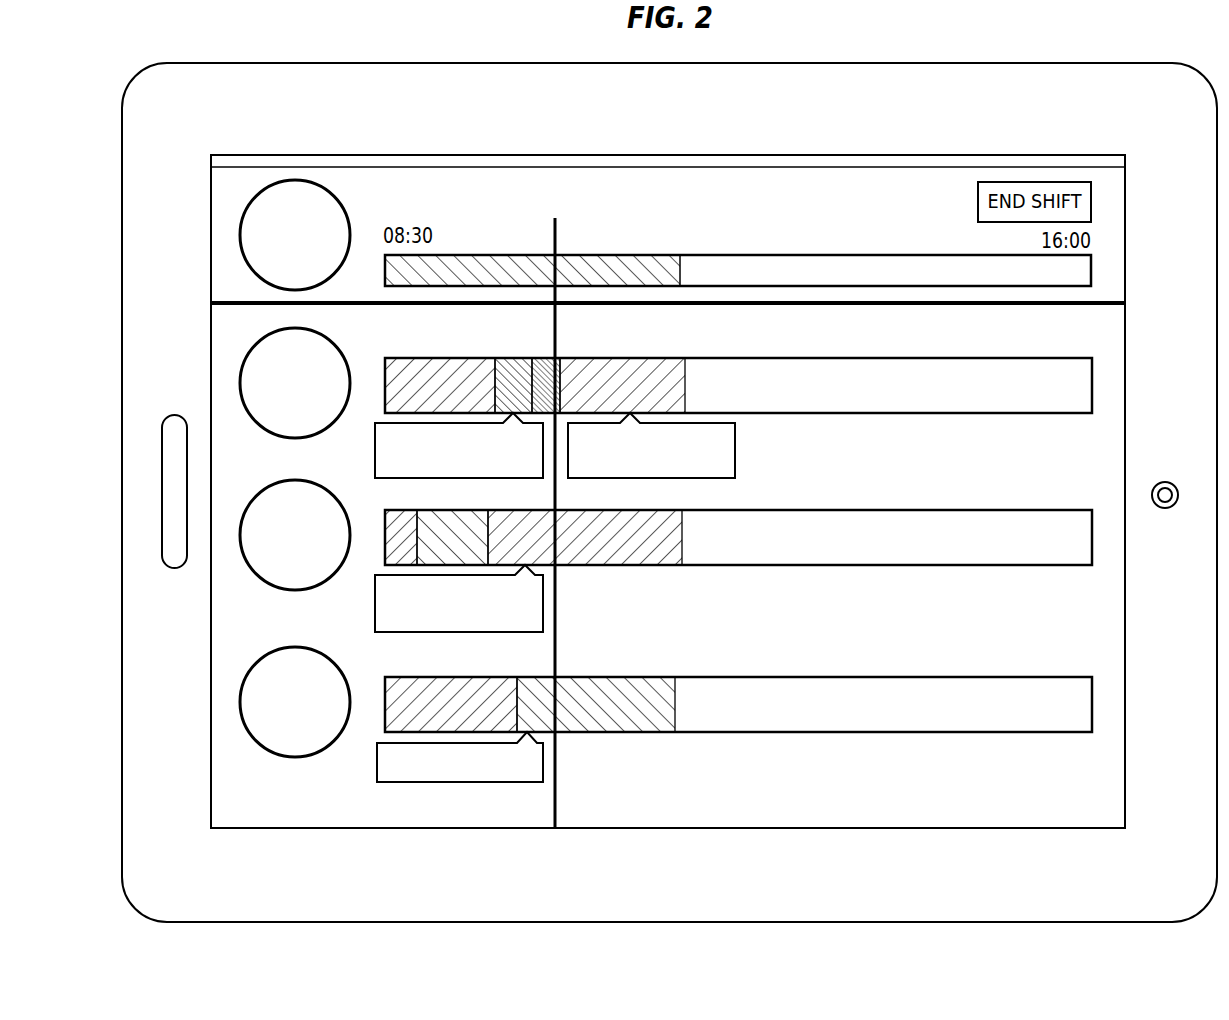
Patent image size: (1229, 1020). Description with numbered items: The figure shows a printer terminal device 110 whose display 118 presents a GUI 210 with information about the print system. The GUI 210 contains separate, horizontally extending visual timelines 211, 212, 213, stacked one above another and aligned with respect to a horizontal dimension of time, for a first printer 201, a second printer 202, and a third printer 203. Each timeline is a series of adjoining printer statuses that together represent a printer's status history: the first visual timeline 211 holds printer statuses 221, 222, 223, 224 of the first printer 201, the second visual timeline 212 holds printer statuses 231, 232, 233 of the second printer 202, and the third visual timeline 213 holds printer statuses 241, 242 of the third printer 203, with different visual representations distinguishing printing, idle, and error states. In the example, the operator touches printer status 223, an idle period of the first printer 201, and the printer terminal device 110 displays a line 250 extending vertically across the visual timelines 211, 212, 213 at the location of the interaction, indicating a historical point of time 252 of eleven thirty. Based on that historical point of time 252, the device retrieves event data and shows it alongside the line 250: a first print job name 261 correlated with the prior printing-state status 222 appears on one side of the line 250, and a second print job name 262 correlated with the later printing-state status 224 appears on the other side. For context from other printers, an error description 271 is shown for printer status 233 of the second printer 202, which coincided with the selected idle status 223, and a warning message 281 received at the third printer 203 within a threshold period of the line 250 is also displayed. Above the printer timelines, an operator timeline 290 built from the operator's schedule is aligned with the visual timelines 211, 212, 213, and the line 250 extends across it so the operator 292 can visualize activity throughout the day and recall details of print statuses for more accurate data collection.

The printer terminal device 110 is at (799, 46).
The display 118 is at (235, 173).
The GUI 210 is at (370, 190).
The historical point of time 252 is at (552, 180).
The line 250 is at (557, 240).
The operator timeline 290 is at (756, 261).
The operator 292 is at (237, 241).
The first printer 201 is at (239, 364).
The second printer 202 is at (241, 573).
The third printer 203 is at (239, 714).
The first visual timeline 211 is at (781, 366).
The second visual timeline 212 is at (791, 523).
The third visual timeline 213 is at (791, 689).
The printer status 221 is at (429, 373).
The printer status 222 is at (511, 378).
The printer status 223 is at (543, 378).
The printer status 224 is at (615, 376).
The printer status 231 is at (398, 528).
The printer status 232 is at (455, 528).
The printer status 233 is at (590, 528).
The printer status 241 is at (488, 693).
The printer status 242 is at (609, 696).
The first print job name 261 is at (375, 450).
The second print job name 262 is at (735, 453).
The error description 271 is at (395, 633).
The warning message 281 is at (418, 783).